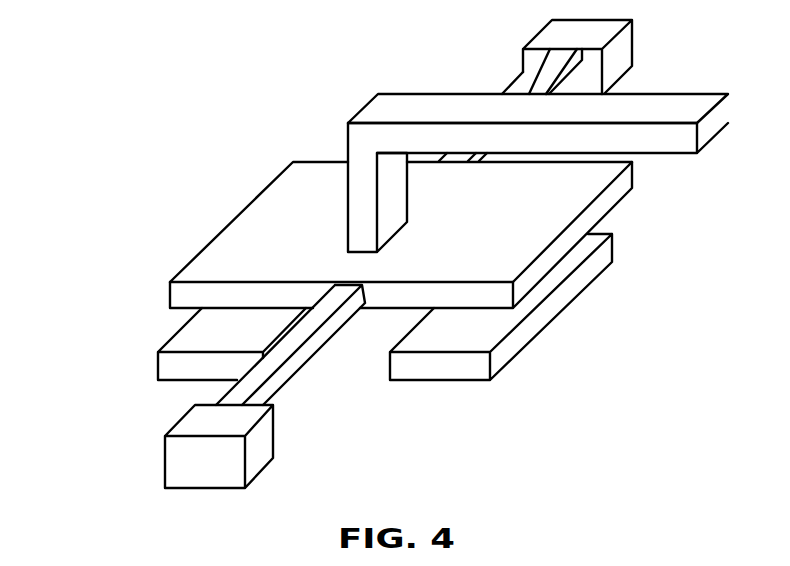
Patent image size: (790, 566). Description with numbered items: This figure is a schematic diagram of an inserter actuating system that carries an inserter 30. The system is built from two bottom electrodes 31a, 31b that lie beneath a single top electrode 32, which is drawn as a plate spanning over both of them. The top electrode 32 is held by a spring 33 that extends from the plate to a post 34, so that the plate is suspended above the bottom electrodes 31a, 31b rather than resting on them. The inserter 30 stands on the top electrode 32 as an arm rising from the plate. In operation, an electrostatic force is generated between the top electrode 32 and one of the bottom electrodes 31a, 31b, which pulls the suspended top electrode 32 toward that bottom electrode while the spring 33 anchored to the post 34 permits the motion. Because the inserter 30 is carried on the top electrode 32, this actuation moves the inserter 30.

The inserter 30 is at (397, 113).
The bottom electrode 31a is at (192, 338).
The bottom electrode 31b is at (488, 332).
The top electrode 32 is at (605, 188).
The spring 33 is at (283, 375).
The post 34 is at (192, 433).